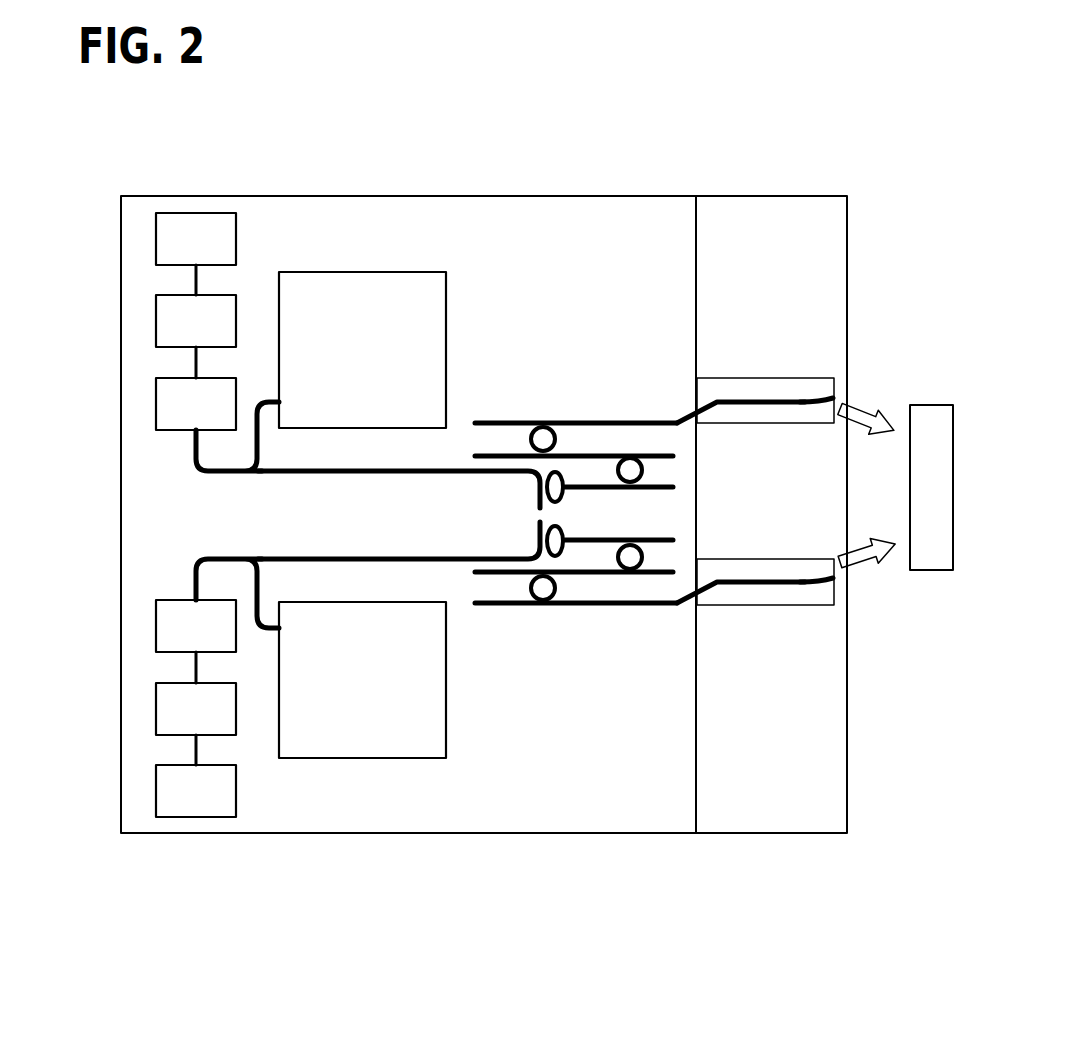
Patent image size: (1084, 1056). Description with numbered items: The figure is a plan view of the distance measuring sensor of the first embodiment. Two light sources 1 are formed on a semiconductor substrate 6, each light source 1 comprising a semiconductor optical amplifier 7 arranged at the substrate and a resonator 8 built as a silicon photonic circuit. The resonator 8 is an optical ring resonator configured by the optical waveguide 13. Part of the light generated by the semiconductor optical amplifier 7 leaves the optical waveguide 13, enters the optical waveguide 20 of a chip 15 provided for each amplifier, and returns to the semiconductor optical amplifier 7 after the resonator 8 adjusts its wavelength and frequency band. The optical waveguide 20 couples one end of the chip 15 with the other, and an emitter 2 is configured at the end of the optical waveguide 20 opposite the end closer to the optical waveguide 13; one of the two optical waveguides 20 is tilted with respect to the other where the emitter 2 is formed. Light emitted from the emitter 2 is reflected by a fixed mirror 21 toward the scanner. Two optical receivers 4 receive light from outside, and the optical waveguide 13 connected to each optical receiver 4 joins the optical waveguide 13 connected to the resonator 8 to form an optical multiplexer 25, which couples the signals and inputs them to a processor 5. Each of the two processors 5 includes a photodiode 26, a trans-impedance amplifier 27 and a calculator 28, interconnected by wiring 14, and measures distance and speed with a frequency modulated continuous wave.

The light source 1 is at (647, 399).
The emitter 2 is at (823, 402).
The optical receiver 4 is at (313, 271).
The processor 5 is at (140, 517).
The semiconductor substrate 6 is at (407, 194).
The semiconductor optical amplifier 7 is at (742, 397).
The resonator 8 is at (579, 420).
The optical waveguide 13 is at (194, 447).
The wiring 14 is at (194, 281).
The chip 15 is at (763, 376).
The optical waveguide 20 is at (793, 397).
The fixed mirror 21 is at (937, 417).
The optical multiplexer 25 is at (230, 472).
The photodiode 26 is at (155, 393).
The trans-impedance amplifier 27 is at (155, 310).
The calculator 28 is at (155, 229).